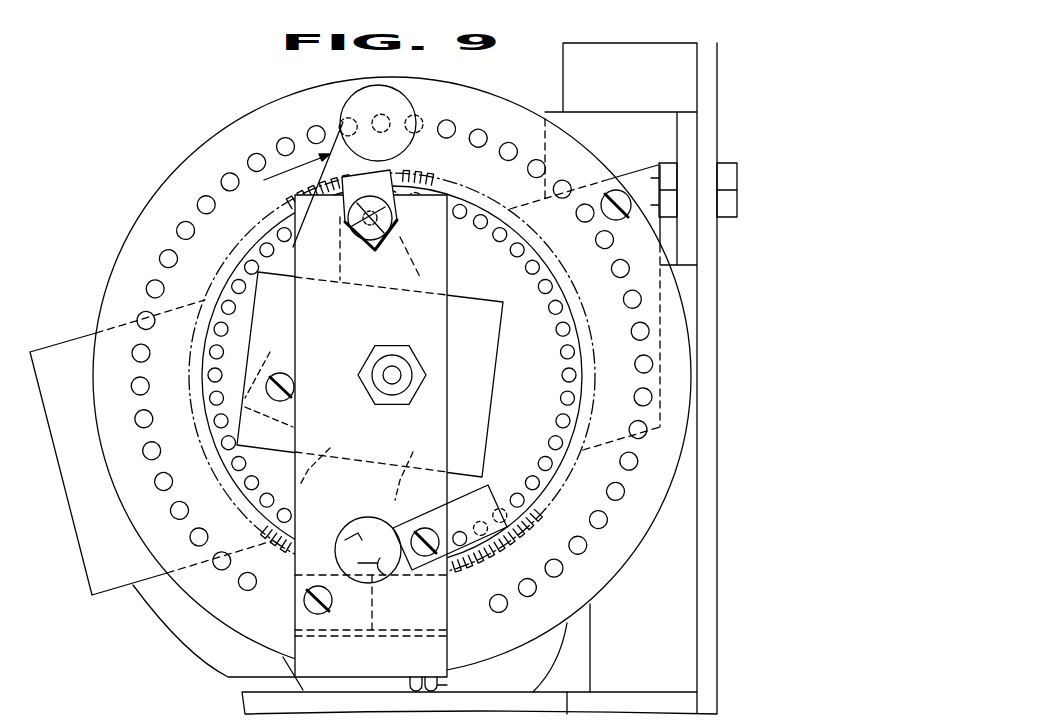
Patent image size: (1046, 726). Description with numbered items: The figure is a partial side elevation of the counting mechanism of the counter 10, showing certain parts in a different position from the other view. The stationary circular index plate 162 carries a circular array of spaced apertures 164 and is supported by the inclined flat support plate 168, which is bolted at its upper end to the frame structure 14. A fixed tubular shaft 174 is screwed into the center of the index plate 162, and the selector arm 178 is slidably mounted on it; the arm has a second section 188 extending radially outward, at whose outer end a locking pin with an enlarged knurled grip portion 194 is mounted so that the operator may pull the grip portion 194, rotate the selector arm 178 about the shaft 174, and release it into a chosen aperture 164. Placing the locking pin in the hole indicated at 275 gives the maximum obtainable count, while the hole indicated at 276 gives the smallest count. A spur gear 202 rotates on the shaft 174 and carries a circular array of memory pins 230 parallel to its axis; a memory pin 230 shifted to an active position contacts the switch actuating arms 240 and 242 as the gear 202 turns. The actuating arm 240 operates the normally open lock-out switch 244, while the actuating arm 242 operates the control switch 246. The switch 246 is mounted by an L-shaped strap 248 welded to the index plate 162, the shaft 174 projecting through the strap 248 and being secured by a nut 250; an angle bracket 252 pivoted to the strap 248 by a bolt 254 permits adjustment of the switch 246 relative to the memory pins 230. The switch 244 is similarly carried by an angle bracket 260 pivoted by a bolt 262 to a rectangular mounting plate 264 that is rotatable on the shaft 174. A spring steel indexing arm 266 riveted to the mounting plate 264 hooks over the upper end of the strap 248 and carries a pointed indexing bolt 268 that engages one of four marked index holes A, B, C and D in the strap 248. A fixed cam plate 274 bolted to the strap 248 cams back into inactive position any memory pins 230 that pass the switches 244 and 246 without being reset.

The counter 10 is at (230, 101).
The frame structure 14 is at (655, 45).
The index plate 162 is at (175, 183).
The apertures 164 is at (340, 125).
The support plate 168 is at (632, 182).
The tubular shaft 174 is at (395, 370).
The selector arm 178 is at (286, 177).
The second section 188 is at (354, 172).
The knurled grip portion 194 is at (400, 97).
The spur gear 202 is at (506, 280).
The memory pins 230 is at (222, 374).
The switch actuating arm 240 is at (350, 524).
The switch actuating arm 242 is at (380, 575).
The lock-out switch 244 is at (338, 458).
The control switch 246 is at (372, 617).
The L-shaped strap 248 is at (385, 318).
The nut 250 is at (370, 385).
The angle bracket 252 is at (400, 637).
The bolt 254 is at (305, 603).
The angle bracket 260 is at (416, 465).
The bolt 262 is at (290, 394).
The mounting plate 264 is at (294, 316).
The indexing arm 266 is at (385, 177).
The indexing bolt 268 is at (422, 240).
The cam plate 274 is at (490, 519).
The hole for maximum count 275 is at (492, 610).
The hole for minimum count 276 is at (240, 588).